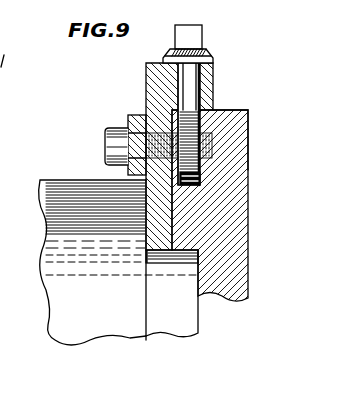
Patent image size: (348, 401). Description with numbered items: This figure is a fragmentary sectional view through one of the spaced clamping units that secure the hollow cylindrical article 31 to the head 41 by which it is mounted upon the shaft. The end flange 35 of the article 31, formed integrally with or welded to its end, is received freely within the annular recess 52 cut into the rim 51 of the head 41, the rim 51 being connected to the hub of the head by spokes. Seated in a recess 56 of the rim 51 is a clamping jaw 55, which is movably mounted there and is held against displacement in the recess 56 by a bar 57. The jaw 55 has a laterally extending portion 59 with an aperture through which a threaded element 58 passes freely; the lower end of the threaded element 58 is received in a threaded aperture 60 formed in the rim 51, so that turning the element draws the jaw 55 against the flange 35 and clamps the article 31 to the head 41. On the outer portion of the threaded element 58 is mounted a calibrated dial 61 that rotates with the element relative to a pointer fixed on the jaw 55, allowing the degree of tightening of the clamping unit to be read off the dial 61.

The article 31 is at (55, 303).
The end flange 35 is at (189, 323).
The head 41 is at (258, 131).
The rim 51 is at (243, 238).
The annular recess 52 is at (186, 254).
The clamping jaw 55 is at (150, 203).
The recess 56 is at (146, 258).
The bar 57 is at (134, 116).
The threaded element 58 is at (200, 96).
The laterally extending portion 59 is at (207, 78).
The threaded aperture 60 is at (200, 172).
The calibrated dial 61 is at (207, 52).